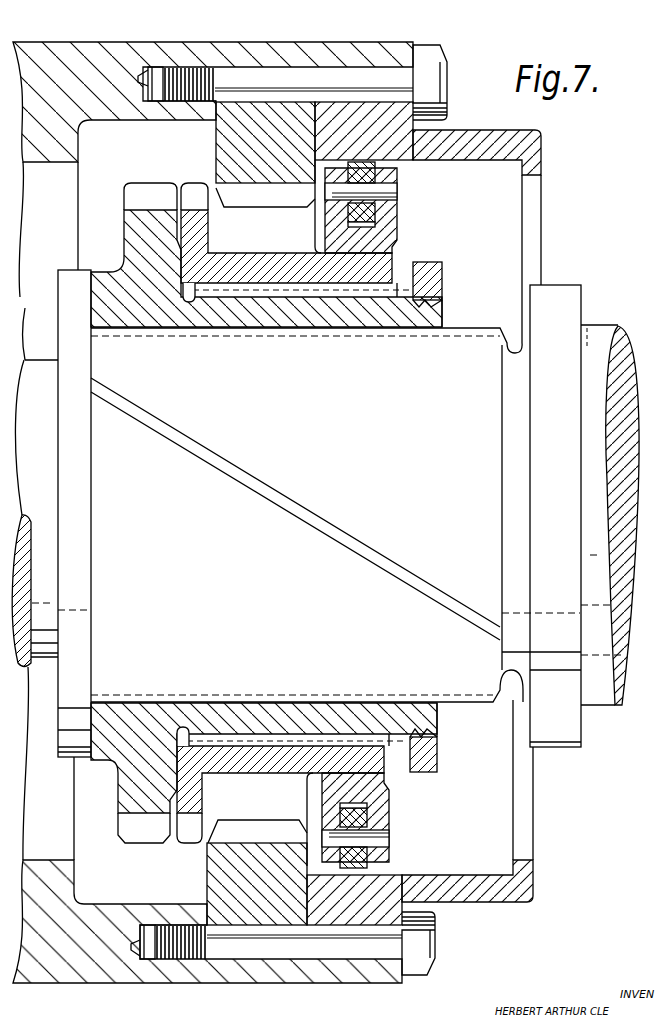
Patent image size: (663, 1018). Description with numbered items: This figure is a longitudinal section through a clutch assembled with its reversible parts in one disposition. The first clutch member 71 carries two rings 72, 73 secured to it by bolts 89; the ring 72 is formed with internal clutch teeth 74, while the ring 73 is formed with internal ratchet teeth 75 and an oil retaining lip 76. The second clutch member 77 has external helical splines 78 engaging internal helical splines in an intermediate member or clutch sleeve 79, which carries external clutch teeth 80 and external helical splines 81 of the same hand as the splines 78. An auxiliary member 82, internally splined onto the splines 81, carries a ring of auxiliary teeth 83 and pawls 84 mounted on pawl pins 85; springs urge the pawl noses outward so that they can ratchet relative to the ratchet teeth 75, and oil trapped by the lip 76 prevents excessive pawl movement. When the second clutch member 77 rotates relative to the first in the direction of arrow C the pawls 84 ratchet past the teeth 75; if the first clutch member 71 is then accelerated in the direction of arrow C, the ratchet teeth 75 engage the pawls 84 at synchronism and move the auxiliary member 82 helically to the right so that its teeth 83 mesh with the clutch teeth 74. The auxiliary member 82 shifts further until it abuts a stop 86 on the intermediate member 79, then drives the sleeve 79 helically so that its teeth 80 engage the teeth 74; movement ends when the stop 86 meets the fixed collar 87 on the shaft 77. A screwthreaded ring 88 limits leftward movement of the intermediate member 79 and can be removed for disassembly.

The first clutch member 71 is at (118, 104).
The ring 72 is at (225, 130).
The ring 73 is at (443, 126).
The internal clutch teeth 74 is at (273, 198).
The internal ratchet teeth 75 is at (378, 163).
The lip 76 is at (529, 177).
The second clutch member 77 is at (592, 362).
The external helical splines 78 is at (477, 327).
The intermediate member or clutch sleeve 79 is at (377, 322).
The external clutch teeth 80 is at (138, 192).
The external helical splines 81 is at (397, 283).
The auxiliary member 82 is at (228, 253).
The auxiliary teeth 83 is at (187, 192).
The pawls 84 is at (372, 224).
The pawl pins 85 is at (332, 193).
The stop 86 is at (432, 268).
The fixed collar 87 is at (537, 390).
The ring 88 is at (68, 316).
The bolts 89 is at (435, 90).
The arrow C is at (606, 335).